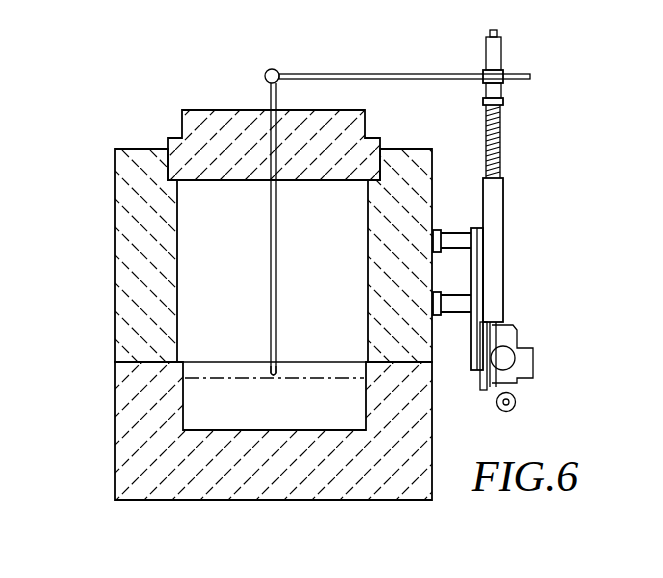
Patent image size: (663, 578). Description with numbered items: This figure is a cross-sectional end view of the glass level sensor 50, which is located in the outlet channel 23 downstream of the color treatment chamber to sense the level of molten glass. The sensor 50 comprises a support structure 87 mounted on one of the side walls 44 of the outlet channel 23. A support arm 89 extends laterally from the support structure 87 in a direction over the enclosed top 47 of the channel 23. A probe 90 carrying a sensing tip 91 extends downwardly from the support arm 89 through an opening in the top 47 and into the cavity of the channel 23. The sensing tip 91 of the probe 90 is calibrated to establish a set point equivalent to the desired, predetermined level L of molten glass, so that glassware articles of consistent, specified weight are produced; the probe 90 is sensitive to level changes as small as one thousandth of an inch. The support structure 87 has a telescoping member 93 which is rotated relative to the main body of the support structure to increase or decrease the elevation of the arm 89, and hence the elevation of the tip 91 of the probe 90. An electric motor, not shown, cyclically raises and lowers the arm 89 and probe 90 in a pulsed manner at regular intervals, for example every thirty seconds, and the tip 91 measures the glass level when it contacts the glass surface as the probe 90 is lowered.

The outlet channel 23 is at (102, 251).
The side wall 44 is at (433, 180).
The enclosed top 47 is at (231, 110).
The glass level sensor 50 is at (511, 221).
The support structure 87 is at (504, 259).
The support arm 89 is at (400, 74).
The probe 90 is at (277, 240).
The sensing tip 91 is at (278, 374).
The telescoping member 93 is at (501, 148).
The predetermined set point level L is at (200, 378).